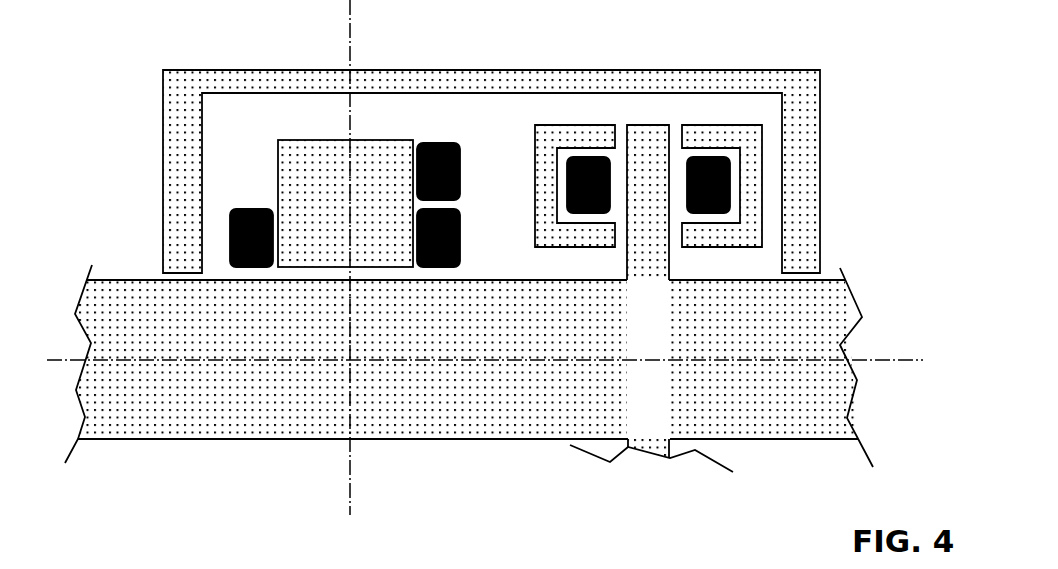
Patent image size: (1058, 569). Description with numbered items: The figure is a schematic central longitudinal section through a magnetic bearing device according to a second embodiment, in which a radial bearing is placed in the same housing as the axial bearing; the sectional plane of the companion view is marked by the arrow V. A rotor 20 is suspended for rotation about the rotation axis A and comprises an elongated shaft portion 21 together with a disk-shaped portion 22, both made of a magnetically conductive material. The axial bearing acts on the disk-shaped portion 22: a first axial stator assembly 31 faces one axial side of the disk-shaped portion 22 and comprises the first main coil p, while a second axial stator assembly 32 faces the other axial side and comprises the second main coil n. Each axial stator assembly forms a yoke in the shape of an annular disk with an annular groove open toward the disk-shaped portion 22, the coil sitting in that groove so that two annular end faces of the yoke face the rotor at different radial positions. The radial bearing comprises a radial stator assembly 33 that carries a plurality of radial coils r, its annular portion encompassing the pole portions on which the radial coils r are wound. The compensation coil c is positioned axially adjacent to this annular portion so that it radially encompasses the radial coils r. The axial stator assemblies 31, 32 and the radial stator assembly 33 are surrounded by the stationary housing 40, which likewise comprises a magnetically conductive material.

The rotor 20 is at (494, 257).
The shaft portion 21 is at (98, 298).
The disk-shaped portion 22 is at (647, 130).
The first axial stator assembly 31 is at (745, 128).
The second axial stator assembly 32 is at (545, 138).
The radial stator assembly 33 is at (312, 157).
The housing 40 is at (792, 78).
The radial coils r is at (245, 217).
The compensation coil c is at (430, 147).
The second main coil n is at (577, 157).
The first main coil p is at (695, 157).
The rotation axis A is at (873, 358).
The section plane / viewing direction V is at (342, 489).